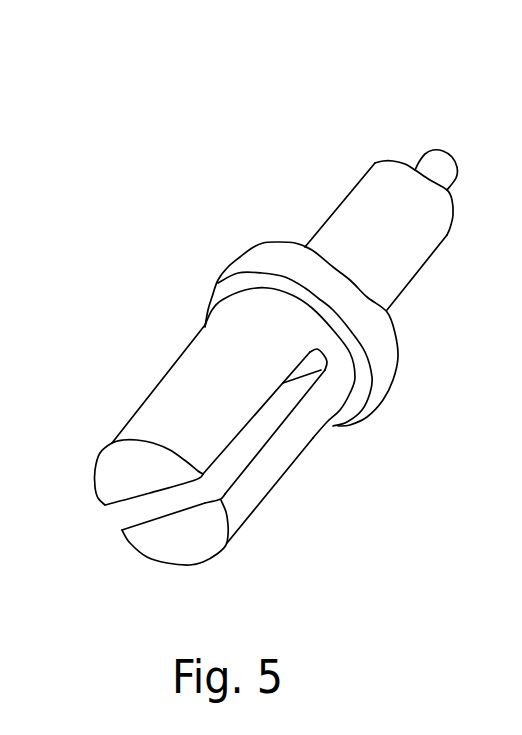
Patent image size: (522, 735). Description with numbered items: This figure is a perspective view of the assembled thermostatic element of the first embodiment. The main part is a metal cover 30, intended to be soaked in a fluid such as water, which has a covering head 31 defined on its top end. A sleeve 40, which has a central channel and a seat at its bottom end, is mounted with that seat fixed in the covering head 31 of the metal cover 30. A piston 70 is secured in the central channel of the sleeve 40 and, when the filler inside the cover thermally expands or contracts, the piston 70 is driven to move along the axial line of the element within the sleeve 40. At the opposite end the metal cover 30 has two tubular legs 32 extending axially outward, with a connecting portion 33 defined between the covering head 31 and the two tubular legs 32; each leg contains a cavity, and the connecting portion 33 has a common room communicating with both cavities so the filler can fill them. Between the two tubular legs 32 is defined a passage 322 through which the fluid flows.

The metal cover 30 is at (196, 340).
The covering head 31 is at (287, 257).
The tubular legs 32 is at (158, 427).
The passage 322 is at (245, 448).
The connecting portion 33 is at (333, 347).
The sleeve 40 is at (337, 207).
The piston 70 is at (447, 148).